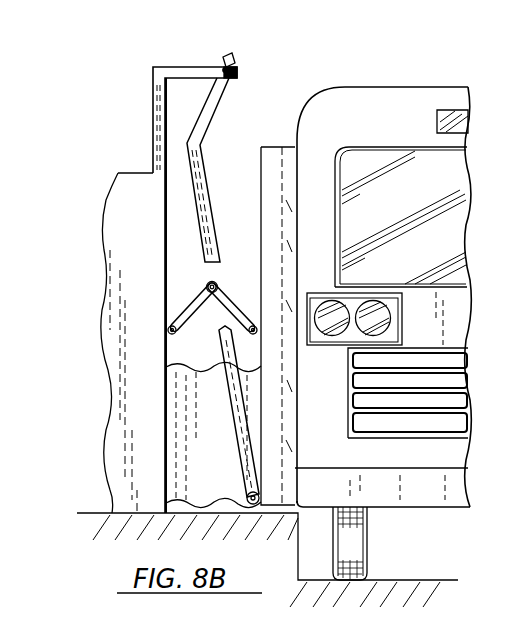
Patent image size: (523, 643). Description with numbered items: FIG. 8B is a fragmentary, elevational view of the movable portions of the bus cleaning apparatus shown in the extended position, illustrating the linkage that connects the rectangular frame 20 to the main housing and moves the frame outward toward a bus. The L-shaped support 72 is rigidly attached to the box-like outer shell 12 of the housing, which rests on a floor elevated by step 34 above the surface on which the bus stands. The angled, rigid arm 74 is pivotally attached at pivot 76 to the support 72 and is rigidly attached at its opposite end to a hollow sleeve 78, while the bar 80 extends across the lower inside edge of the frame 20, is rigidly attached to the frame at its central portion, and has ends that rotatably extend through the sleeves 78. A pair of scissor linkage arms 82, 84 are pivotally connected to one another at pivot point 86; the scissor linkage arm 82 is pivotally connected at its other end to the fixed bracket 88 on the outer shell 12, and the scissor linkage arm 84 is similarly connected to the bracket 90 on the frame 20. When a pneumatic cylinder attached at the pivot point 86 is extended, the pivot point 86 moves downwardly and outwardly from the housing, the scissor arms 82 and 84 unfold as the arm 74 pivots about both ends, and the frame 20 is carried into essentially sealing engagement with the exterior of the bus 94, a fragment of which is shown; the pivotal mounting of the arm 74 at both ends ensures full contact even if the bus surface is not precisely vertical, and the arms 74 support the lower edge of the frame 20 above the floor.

The outer shell 12 is at (118, 192).
The rectangular frame 20 is at (283, 187).
The step 34 is at (297, 560).
The L-shaped support 72 is at (155, 102).
The angled, rigid arm 74 is at (203, 130).
The pivot 76 is at (223, 68).
The hollow sleeve 78 is at (250, 490).
The bar 80 is at (247, 497).
The scissor linkage arm 82 is at (185, 300).
The scissor linkage arm 84 is at (225, 300).
The pivot point 86 is at (208, 283).
The fixed bracket 88 is at (168, 330).
The bracket 90 is at (257, 323).
The bus 94 is at (362, 88).